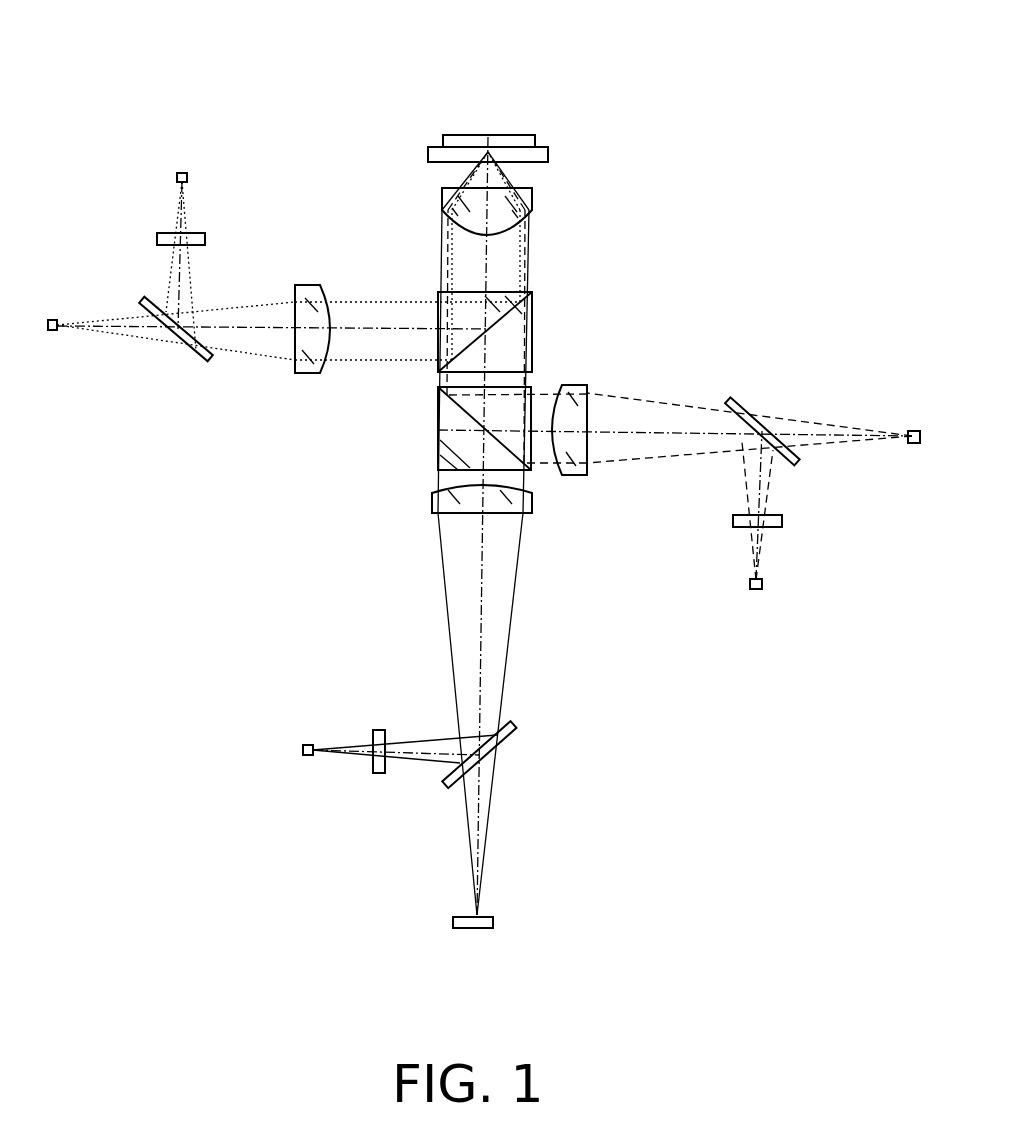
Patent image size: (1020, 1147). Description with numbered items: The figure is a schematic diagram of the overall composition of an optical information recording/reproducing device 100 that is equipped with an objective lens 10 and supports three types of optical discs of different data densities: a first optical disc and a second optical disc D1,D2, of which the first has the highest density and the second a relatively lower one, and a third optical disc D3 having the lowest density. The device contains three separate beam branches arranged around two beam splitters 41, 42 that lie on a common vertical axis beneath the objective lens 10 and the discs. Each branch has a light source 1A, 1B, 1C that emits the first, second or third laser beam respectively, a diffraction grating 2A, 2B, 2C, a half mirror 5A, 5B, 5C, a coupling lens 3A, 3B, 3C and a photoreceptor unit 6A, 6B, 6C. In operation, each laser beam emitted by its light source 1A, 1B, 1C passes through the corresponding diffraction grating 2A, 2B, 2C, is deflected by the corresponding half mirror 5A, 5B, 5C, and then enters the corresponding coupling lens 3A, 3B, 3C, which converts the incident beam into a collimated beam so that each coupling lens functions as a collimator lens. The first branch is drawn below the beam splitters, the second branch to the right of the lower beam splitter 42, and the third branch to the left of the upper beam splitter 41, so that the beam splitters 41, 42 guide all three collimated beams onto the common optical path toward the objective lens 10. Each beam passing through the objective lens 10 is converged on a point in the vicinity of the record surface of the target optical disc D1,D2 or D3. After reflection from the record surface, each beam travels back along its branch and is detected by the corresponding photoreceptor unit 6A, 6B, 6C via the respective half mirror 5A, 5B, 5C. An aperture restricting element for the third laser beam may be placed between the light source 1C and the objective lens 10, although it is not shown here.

The optical information recording/reproducing device 100 is at (382, 36).
The third optical disc D3 is at (470, 134).
The first and second optical discs D1,D2 is at (548, 155).
The objective lens 10 is at (507, 232).
The beam splitter 41 is at (535, 328).
The beam splitter 42 is at (438, 430).
The coupling lens 3A is at (458, 515).
The coupling lens 3B is at (592, 407).
The coupling lens 3C is at (295, 347).
The half mirror 5A is at (513, 733).
The half mirror 5B is at (772, 386).
The half mirror 5C is at (197, 352).
The diffraction grating 2A is at (382, 775).
The diffraction grating 2B is at (782, 520).
The diffraction grating 2C is at (205, 238).
The light source 1A is at (302, 749).
The light source 1B is at (763, 584).
The light source 1C is at (183, 172).
The photoreceptor unit 6A is at (493, 922).
The photoreceptor unit 6B is at (914, 430).
The photoreceptor unit 6C is at (53, 320).